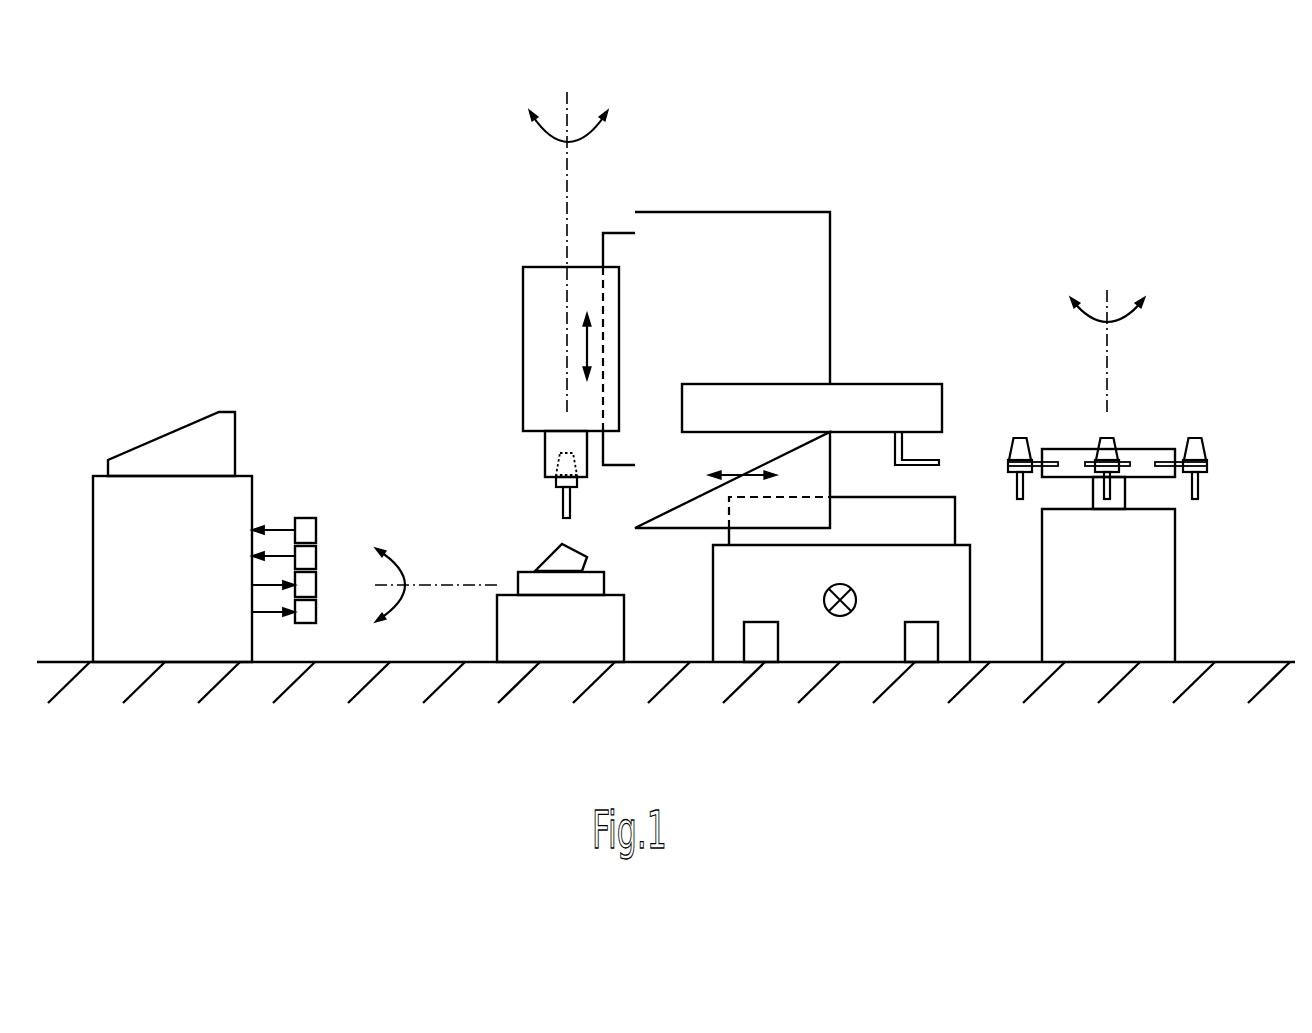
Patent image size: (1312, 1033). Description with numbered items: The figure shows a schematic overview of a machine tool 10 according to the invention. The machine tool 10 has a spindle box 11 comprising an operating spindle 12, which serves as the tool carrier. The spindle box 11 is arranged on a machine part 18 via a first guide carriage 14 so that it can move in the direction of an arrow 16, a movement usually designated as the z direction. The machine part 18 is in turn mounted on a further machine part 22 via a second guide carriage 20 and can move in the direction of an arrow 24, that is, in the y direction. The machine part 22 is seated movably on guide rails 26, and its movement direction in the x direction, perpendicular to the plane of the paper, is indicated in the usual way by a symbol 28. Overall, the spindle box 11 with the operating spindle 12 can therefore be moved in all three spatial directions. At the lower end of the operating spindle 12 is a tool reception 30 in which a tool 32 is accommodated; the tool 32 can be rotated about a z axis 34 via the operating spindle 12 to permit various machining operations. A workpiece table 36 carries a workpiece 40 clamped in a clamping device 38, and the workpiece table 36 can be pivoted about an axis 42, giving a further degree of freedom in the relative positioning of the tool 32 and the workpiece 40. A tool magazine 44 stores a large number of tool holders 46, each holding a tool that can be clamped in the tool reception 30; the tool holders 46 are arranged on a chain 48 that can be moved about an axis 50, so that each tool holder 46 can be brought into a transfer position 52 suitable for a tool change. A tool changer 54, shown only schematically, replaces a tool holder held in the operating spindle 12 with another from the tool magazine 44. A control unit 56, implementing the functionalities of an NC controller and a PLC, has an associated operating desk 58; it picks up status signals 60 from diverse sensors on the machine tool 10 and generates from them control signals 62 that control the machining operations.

The machine tool 10 is at (666, 387).
The spindle box 11 is at (523, 305).
The operating spindle 12 is at (545, 447).
The first guide carriage 14 is at (616, 242).
The arrow 16 is at (590, 350).
The machine part 18 is at (736, 223).
The second guide carriage 20 is at (935, 518).
The machine part 22 is at (958, 617).
The arrow 24 is at (744, 474).
The guide rails 26 is at (755, 645).
The symbol 28 is at (843, 616).
The tool reception 30 is at (557, 463).
The tool 32 is at (567, 505).
The z axis 34 is at (566, 110).
The workpiece table 36 is at (561, 640).
The clamping device 38 is at (541, 597).
The workpiece 40 is at (545, 566).
The axis 42 is at (433, 590).
The tool magazine 44 is at (1216, 432).
The tool holders 46 is at (1112, 445).
The chain 48 is at (1144, 465).
The axis 50 is at (1106, 297).
The transfer position 52 is at (1020, 425).
The tool changer 54 is at (863, 396).
The control unit 56 is at (110, 545).
The operating desk 58 is at (175, 447).
The status signals 60 is at (305, 518).
The control signals 62 is at (305, 623).